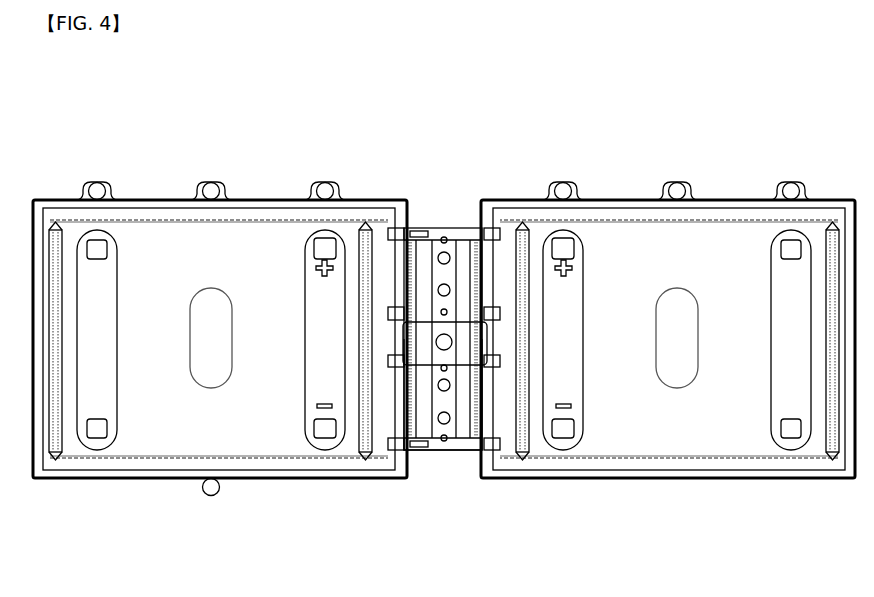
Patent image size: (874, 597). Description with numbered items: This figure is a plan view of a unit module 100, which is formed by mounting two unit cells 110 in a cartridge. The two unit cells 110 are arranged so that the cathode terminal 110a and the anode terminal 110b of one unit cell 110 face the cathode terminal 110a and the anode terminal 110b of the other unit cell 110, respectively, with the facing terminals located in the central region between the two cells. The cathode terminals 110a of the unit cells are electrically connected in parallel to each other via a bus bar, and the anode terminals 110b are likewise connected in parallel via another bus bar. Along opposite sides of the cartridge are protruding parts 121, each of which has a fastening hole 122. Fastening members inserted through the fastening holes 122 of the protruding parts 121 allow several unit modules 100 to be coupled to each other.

The unit module 100 is at (102, 127).
The unit cell 110 is at (152, 252).
The cathode terminal 110a is at (465, 228).
The anode terminal 110b is at (465, 450).
The protruding part 121 is at (205, 495).
The fastening hole 122 is at (212, 488).